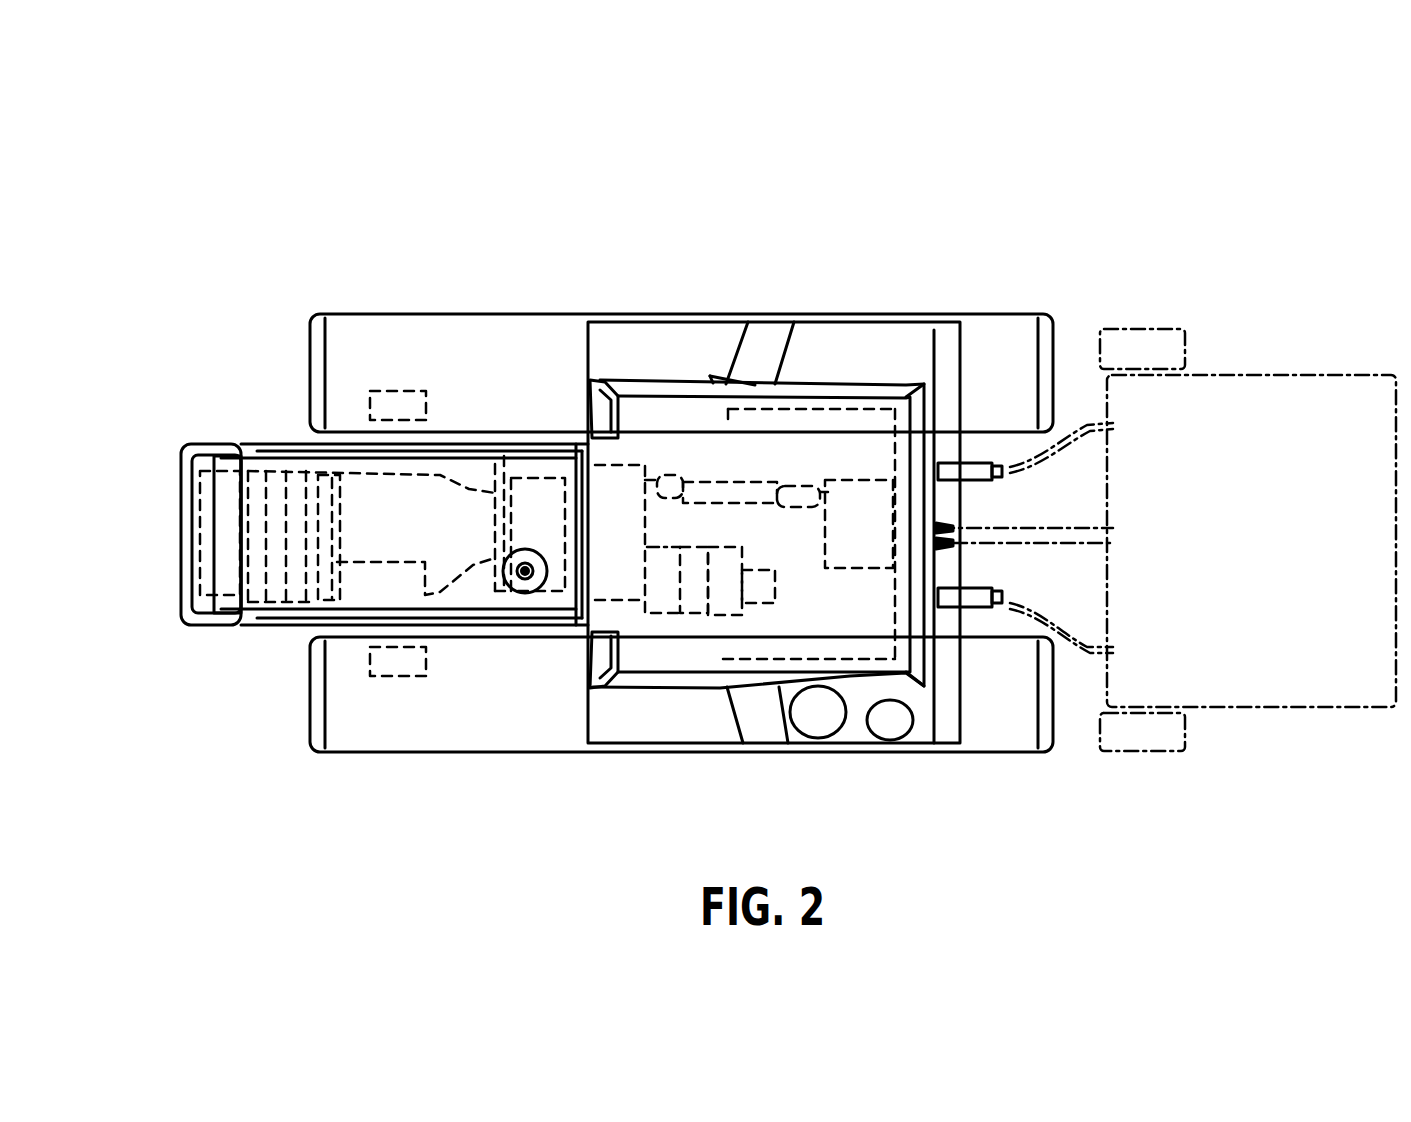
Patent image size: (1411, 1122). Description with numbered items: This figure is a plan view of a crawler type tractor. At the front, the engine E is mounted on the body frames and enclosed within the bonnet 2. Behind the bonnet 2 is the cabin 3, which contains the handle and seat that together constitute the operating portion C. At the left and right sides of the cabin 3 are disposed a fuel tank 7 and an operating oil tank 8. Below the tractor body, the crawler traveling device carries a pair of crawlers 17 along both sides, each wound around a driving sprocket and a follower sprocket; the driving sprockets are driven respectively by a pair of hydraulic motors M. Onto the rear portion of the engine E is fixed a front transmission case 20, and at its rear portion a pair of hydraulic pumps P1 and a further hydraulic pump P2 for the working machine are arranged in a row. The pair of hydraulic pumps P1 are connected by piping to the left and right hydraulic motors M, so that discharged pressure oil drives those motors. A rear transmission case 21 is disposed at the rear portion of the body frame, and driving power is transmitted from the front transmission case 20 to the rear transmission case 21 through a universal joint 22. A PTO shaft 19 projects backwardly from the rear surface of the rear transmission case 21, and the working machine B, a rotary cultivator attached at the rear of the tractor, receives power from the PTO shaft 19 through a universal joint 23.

The bonnet 2 is at (394, 415).
The cabin 3 is at (757, 436).
The fuel tank 7 is at (935, 690).
The operating oil tank 8 is at (830, 298).
The crawler 17 is at (681, 522).
The PTO shaft 19 is at (953, 543).
The front transmission case 20 is at (620, 607).
The rear transmission case 21 is at (863, 662).
The universal joint 22 is at (728, 480).
The universal joint 23 is at (1060, 528).
The hydraulic pump P1 is at (668, 615).
The hydraulic pump P2 is at (784, 709).
The hydraulic motor M is at (388, 535).
The engine E is at (306, 440).
The operating portion C is at (774, 467).
The working machine B is at (1248, 456).